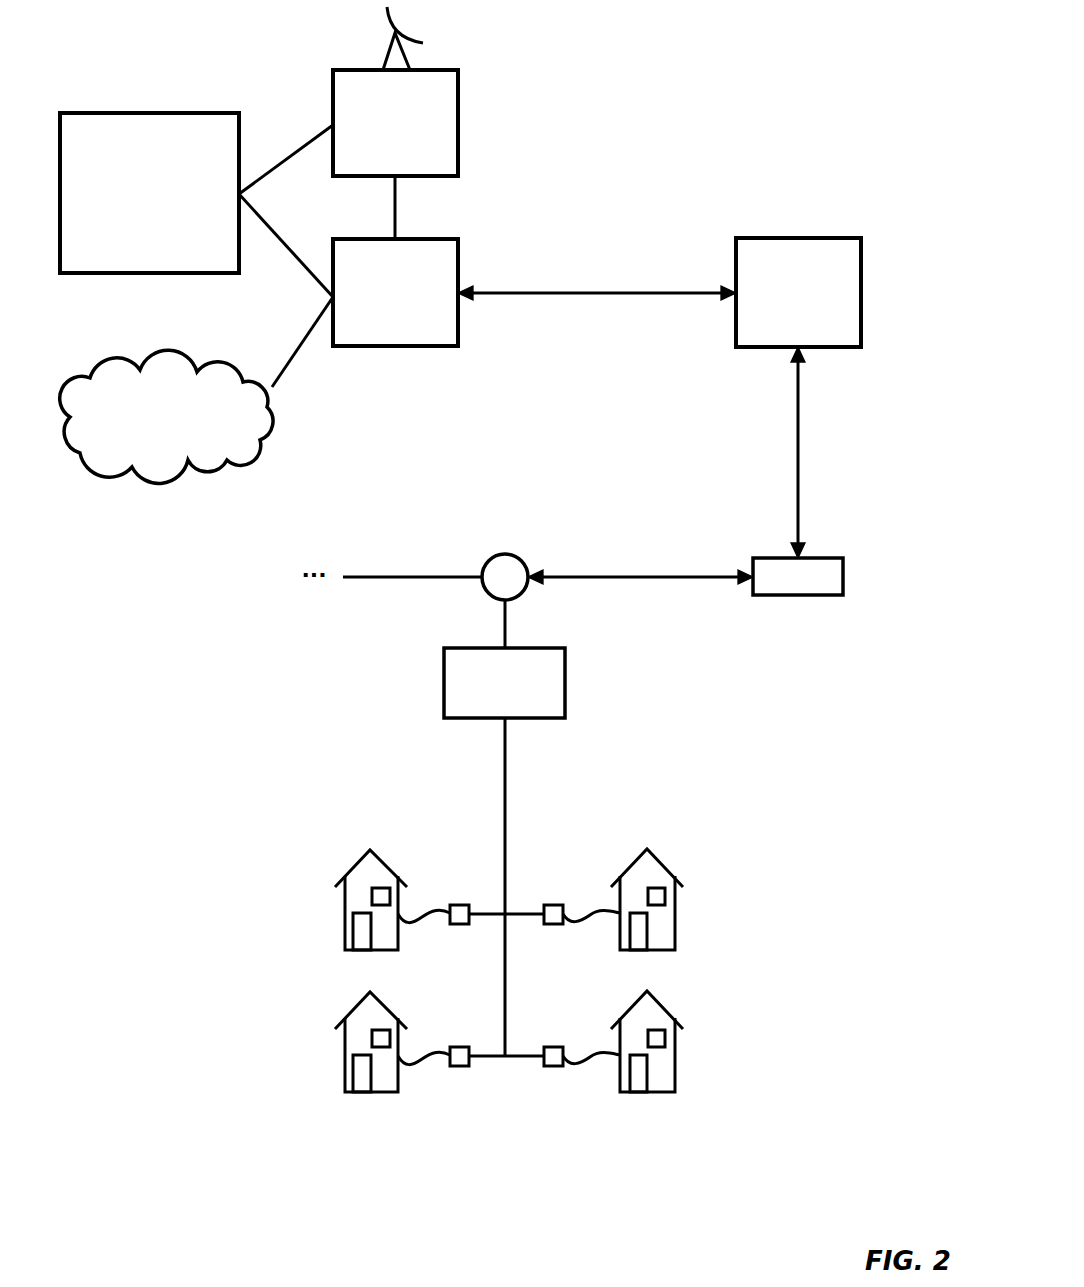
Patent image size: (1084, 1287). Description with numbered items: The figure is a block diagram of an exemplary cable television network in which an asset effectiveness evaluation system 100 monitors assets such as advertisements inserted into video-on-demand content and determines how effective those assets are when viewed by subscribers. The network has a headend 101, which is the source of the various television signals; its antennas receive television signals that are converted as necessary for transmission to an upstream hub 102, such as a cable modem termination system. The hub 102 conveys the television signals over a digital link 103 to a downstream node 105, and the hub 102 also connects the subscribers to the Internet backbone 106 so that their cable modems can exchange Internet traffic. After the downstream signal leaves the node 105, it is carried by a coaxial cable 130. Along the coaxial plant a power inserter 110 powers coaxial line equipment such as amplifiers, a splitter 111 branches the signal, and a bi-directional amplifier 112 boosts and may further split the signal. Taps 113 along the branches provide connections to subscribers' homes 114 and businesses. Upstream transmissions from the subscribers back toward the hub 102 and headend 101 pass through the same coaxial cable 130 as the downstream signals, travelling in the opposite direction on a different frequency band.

The asset effectiveness evaluation system 100 is at (130, 266).
The headend 101 is at (375, 136).
The hub 102 is at (375, 321).
The communication link 103 is at (553, 293).
The node 105 is at (778, 321).
The Internet backbone 106 is at (202, 441).
The power inserter 110 is at (778, 589).
The splitter 111 is at (505, 554).
The bi-directional amplifier 112 is at (485, 696).
The tap 113 is at (465, 905).
The subscriber's home 114 is at (364, 846).
The coaxial cable 130 is at (798, 505).